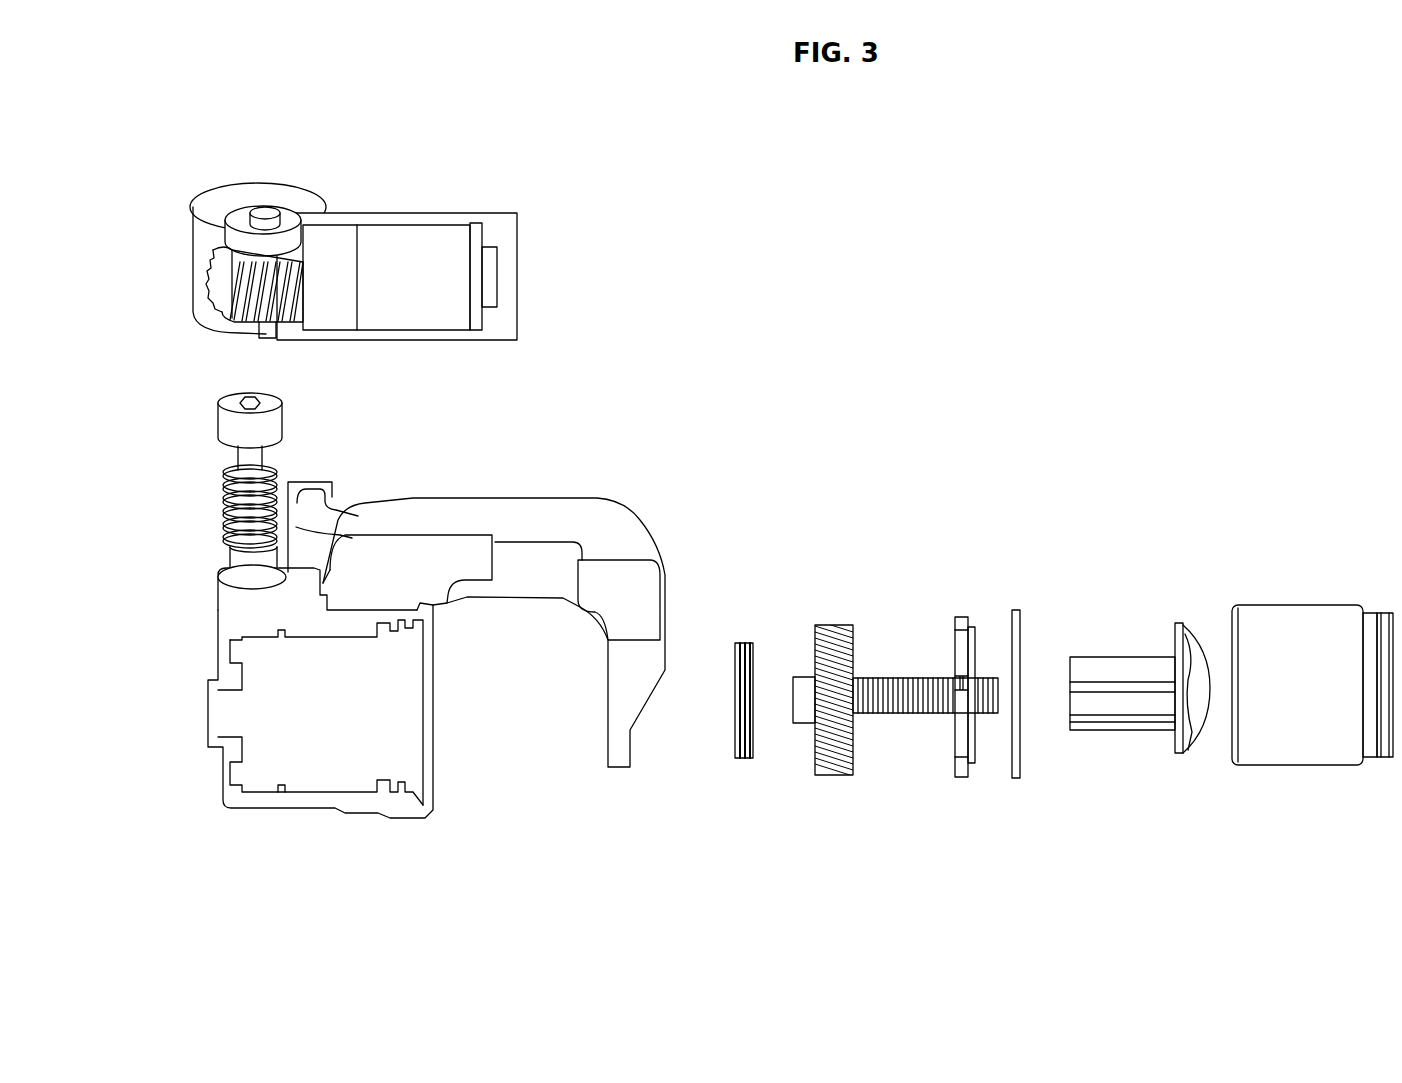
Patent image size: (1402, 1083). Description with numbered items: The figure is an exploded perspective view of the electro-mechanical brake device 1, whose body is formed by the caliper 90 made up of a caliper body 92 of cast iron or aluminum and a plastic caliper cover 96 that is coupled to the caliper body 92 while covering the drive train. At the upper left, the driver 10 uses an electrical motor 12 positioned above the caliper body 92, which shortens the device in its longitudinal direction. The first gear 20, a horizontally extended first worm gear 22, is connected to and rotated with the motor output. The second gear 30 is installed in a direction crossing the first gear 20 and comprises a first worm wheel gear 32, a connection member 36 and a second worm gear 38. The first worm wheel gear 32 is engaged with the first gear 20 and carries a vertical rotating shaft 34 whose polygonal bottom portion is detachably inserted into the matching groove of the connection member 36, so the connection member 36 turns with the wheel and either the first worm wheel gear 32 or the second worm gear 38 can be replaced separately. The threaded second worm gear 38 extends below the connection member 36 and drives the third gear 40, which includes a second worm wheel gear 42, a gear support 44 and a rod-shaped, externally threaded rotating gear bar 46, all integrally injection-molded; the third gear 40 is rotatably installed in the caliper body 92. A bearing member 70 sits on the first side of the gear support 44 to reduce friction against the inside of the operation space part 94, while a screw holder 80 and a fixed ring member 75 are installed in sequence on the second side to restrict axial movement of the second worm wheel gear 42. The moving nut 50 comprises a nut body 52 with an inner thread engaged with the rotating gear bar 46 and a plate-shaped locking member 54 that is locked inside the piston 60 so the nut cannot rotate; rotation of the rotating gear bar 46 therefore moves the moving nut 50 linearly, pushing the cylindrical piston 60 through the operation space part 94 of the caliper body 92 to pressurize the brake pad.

The electro-mechanical brake device 1 is at (884, 284).
The driver 10 is at (425, 192).
The electrical motor 12 is at (343, 234).
The first gear 20 is at (296, 336).
The first worm gear 22 is at (307, 301).
The second gear 30 is at (208, 232).
The first worm wheel gear 32 is at (214, 273).
The rotating shaft 34 is at (263, 325).
The connection member 36 is at (220, 424).
The second worm gear 38 is at (226, 521).
The third gear 40 is at (812, 570).
The second worm wheel gear 42 is at (832, 638).
The gear support 44 is at (800, 683).
The rotating gear bar 46 is at (890, 684).
The moving nut 50 is at (1127, 620).
The nut body 52 is at (1118, 721).
The locking member 54 is at (1181, 755).
The piston 60 is at (1300, 622).
The bearing member 70 is at (740, 640).
The fixed ring member 75 is at (1017, 608).
The screw holder 80 is at (963, 603).
The caliper 90 is at (584, 476).
The caliper body 92 is at (527, 507).
The operation space part 94 is at (314, 824).
The caliper cover 96 is at (497, 212).